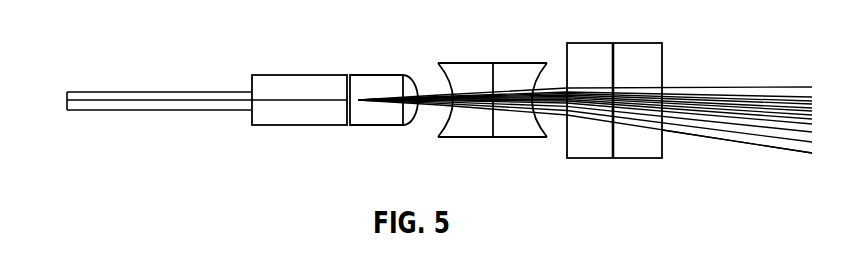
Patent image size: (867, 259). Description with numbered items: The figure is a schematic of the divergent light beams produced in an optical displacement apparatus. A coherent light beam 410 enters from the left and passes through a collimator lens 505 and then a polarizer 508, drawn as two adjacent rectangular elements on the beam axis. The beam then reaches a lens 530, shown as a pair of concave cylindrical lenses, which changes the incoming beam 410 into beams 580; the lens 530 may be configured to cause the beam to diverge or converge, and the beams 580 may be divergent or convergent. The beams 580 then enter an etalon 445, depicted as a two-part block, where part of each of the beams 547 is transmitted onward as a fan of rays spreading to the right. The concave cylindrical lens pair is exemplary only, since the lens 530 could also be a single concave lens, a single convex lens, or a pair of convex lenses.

The coherent light beam 410 is at (90, 91).
The collimator lens 505 is at (278, 75).
The polarizer 508 is at (367, 75).
The beams 580 is at (439, 104).
The lens 530 is at (467, 63).
The etalon 445 is at (583, 43).
The beams 547 is at (768, 148).